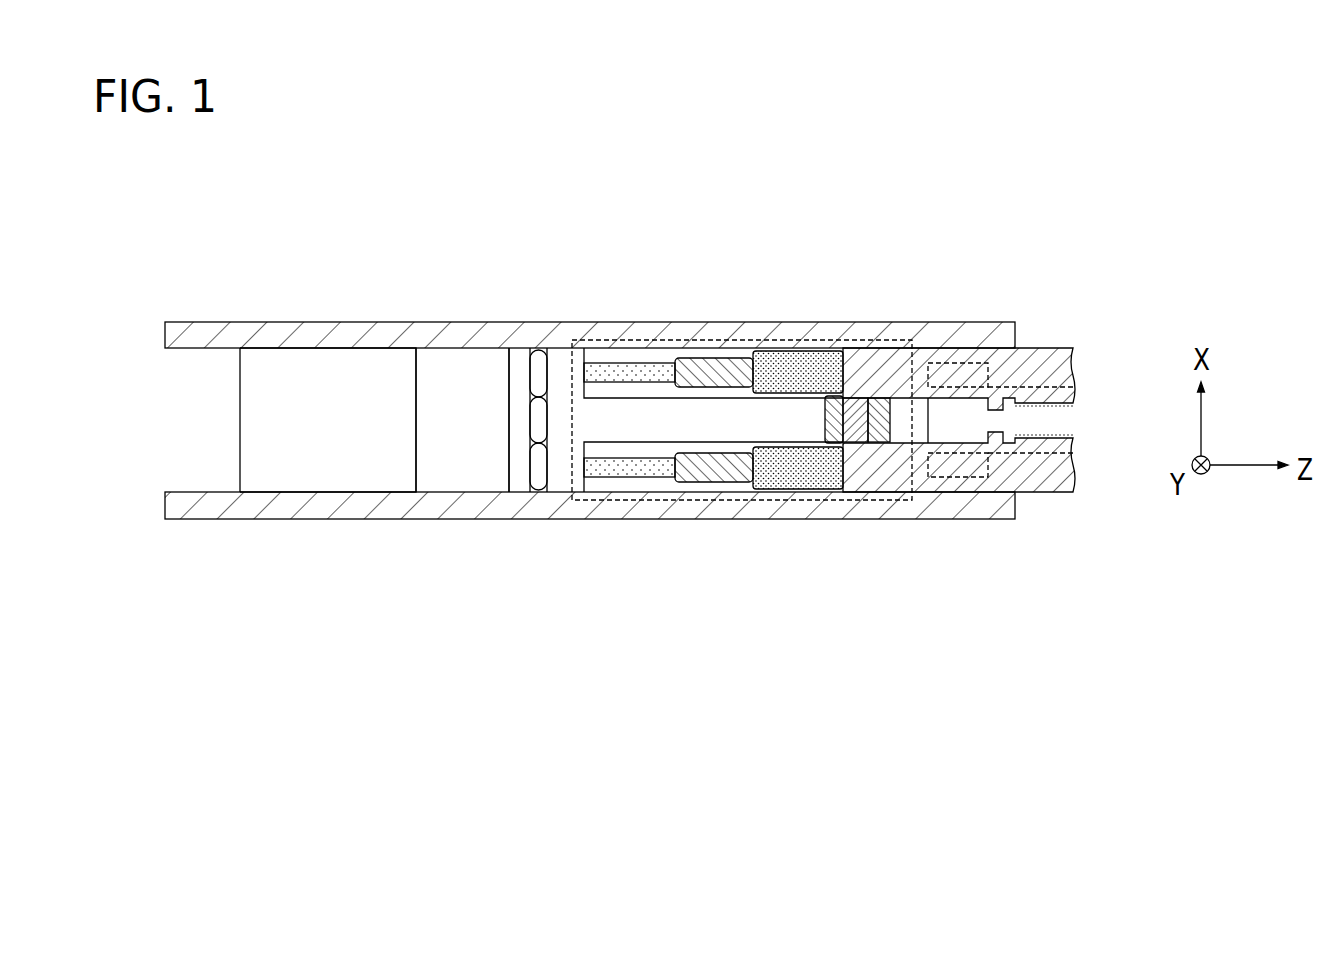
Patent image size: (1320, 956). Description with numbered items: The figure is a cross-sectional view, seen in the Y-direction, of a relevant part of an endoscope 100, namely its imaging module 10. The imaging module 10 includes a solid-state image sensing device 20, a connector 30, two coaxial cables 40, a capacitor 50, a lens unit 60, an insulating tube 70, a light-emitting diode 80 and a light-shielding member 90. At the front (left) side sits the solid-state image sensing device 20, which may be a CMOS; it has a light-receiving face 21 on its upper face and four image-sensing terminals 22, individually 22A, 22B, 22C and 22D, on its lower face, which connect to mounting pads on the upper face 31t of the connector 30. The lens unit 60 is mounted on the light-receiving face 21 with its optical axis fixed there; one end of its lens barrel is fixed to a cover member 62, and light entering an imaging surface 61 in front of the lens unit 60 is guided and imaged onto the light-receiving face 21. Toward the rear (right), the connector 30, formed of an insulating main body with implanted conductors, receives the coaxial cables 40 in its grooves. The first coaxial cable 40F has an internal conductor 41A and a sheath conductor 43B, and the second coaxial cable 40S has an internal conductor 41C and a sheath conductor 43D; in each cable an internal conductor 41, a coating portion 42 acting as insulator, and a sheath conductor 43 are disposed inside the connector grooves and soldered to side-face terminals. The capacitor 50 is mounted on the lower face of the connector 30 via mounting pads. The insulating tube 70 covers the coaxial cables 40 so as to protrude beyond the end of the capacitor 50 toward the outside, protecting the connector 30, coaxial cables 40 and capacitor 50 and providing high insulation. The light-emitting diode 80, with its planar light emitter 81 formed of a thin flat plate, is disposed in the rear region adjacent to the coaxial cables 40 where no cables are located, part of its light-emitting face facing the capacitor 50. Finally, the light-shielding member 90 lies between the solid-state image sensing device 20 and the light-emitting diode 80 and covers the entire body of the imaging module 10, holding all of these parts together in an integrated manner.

The imaging module 10 is at (1088, 176).
The endoscope 100 is at (636, 406).
The solid-state image sensing device 20 is at (522, 358).
The light-receiving face 21 is at (508, 387).
The image-sensing terminals 22 is at (537, 372).
The image-sensing terminal 22A is at (538, 466).
The image-sensing terminal 22B is at (538, 466).
The image-sensing terminal 22C is at (538, 373).
The image-sensing terminal 22D is at (503, 528).
The connector 30 is at (565, 500).
The upper face of the connector 31t is at (537, 423).
The coaxial cables 40 is at (959, 424).
The second coaxial cable 40S is at (933, 352).
The first coaxial cable 40F is at (947, 480).
The internal conductor 41 is at (657, 413).
The internal conductor 41A is at (634, 473).
The internal conductor 41C is at (637, 363).
The coating portion 42 is at (717, 363).
The sheath conductor 43 is at (829, 428).
The sheath conductor 43B is at (803, 475).
The sheath conductor 43D is at (788, 362).
The capacitor 50 is at (880, 417).
The lens unit 60 is at (312, 472).
The imaging surface 61 is at (240, 403).
The cover member 62 is at (463, 473).
The insulating tube 70 is at (832, 500).
The light-emitting diode 80 is at (1031, 350).
The light emitter 81 is at (963, 423).
The light-shielding member 90 is at (263, 507).